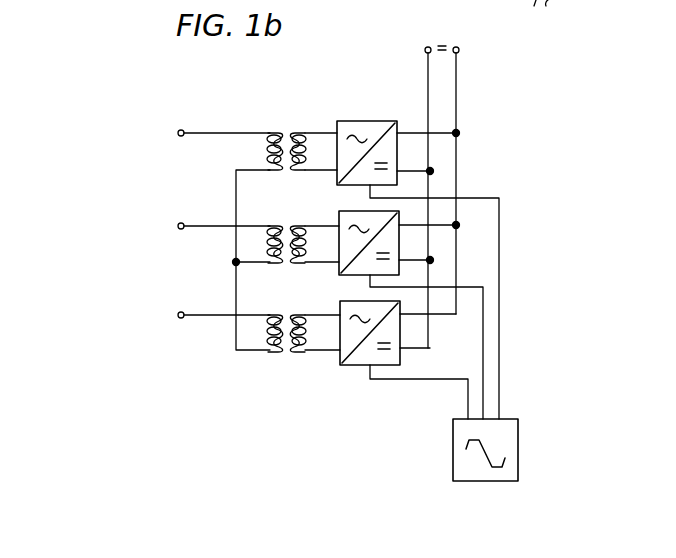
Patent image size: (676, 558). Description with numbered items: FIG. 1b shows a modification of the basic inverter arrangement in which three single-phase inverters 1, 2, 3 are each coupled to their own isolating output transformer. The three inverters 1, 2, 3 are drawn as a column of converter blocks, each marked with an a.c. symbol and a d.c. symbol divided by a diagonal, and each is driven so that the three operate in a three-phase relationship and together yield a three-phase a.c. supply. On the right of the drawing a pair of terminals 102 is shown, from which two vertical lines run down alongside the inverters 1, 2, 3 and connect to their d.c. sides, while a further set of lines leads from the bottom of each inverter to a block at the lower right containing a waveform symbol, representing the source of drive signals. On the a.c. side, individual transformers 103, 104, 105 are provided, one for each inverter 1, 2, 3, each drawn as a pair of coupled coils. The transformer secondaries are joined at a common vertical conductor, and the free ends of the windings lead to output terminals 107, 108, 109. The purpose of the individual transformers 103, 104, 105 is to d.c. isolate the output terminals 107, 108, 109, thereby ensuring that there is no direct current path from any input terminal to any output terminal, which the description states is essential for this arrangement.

The single-phase inverter 1 is at (374, 111).
The single-phase inverter 2 is at (349, 204).
The single-phase inverter 3 is at (350, 294).
The DC terminals 102 is at (442, 183).
The individual transformer 103 is at (288, 124).
The individual transformer 104 is at (285, 224).
The individual transformer 105 is at (290, 308).
The output terminal 107 is at (202, 134).
The output terminal 108 is at (203, 227).
The output terminal 109 is at (202, 316).